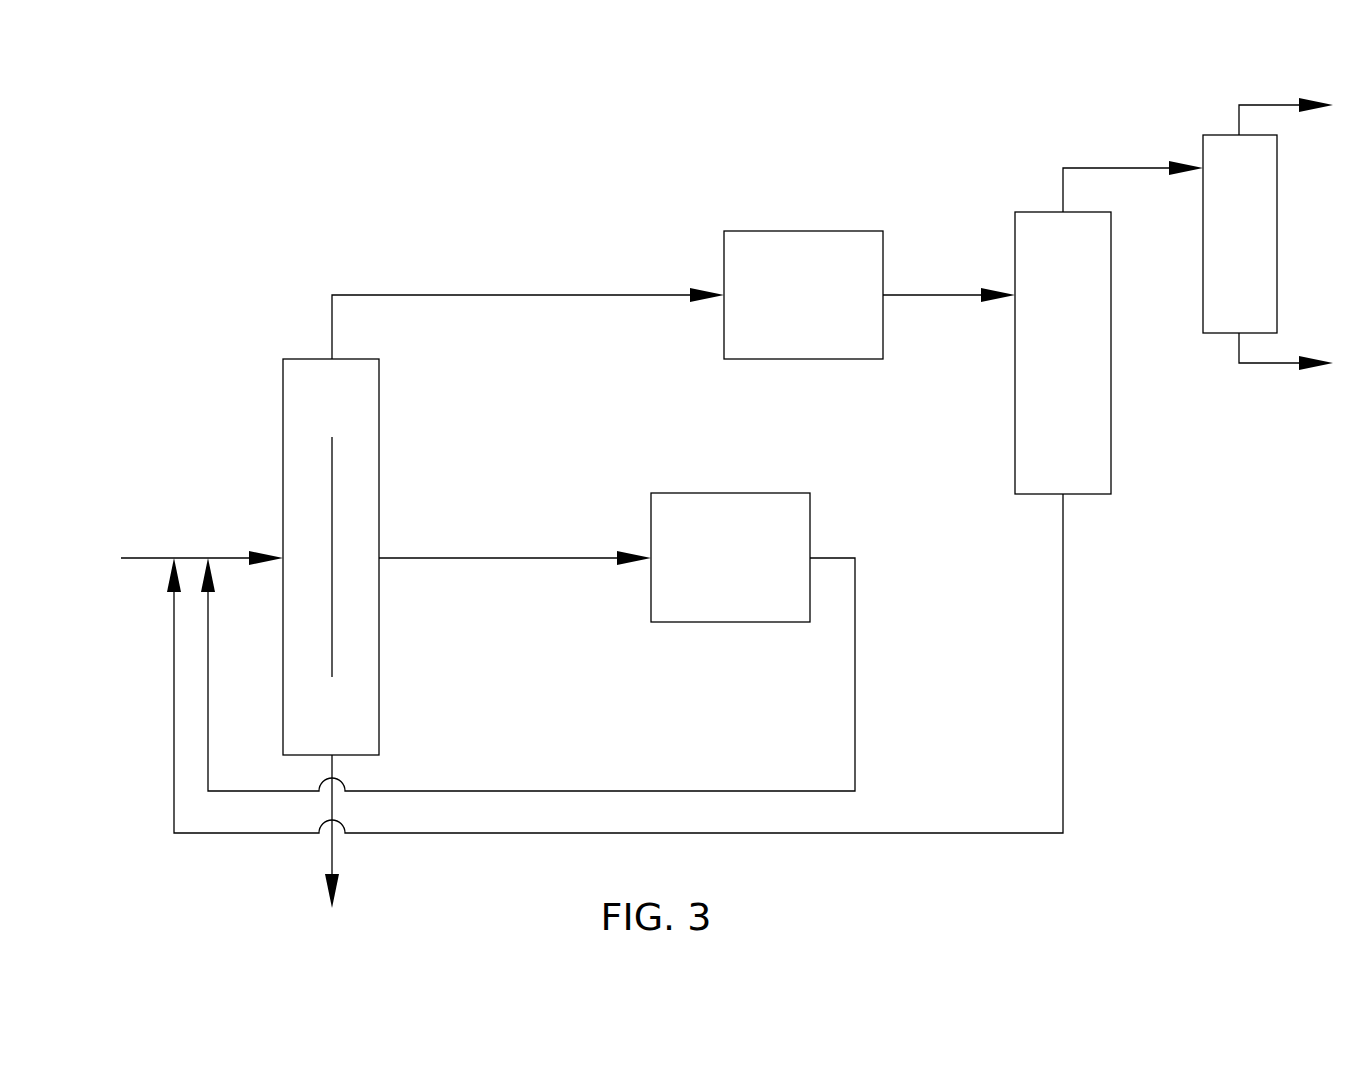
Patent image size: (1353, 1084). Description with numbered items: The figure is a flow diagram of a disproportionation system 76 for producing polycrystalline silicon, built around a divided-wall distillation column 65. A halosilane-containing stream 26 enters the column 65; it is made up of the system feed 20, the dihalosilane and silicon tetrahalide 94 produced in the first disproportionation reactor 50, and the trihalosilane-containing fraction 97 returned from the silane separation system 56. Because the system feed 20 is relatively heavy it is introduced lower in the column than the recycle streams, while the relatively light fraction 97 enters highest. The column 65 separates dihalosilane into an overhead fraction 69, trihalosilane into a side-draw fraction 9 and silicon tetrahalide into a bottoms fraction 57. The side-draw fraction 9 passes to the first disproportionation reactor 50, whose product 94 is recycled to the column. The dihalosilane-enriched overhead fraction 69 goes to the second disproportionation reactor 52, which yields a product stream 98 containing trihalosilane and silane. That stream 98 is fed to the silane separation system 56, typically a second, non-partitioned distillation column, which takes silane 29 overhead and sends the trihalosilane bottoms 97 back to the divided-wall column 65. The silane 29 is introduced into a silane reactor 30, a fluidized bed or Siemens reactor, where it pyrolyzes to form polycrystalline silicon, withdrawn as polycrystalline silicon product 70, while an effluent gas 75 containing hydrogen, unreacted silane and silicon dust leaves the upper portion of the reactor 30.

The disproportionation system 76 is at (244, 259).
The divided-wall distillation column 65 is at (258, 410).
The system feed 20 is at (146, 557).
The halosilane-containing stream 26 is at (232, 557).
The overhead fraction 69 is at (520, 295).
The second disproportionation reactor 52 is at (817, 307).
The second disproportionation reactor product stream 98 is at (931, 294).
The silane separation system 56 is at (1076, 364).
The silane 29 is at (1060, 197).
The silane reactor 30 is at (1253, 246).
The effluent gas 75 is at (1238, 120).
The polycrystalline silicon product 70 is at (1238, 357).
The side-draw fraction 9 is at (477, 557).
The first disproportionation reactor 50 is at (741, 572).
The dihalosilane and silicon tetrahalide 94 is at (668, 791).
The trihalosilane-containing fraction 97 is at (900, 833).
The bottoms fraction 57 is at (336, 855).